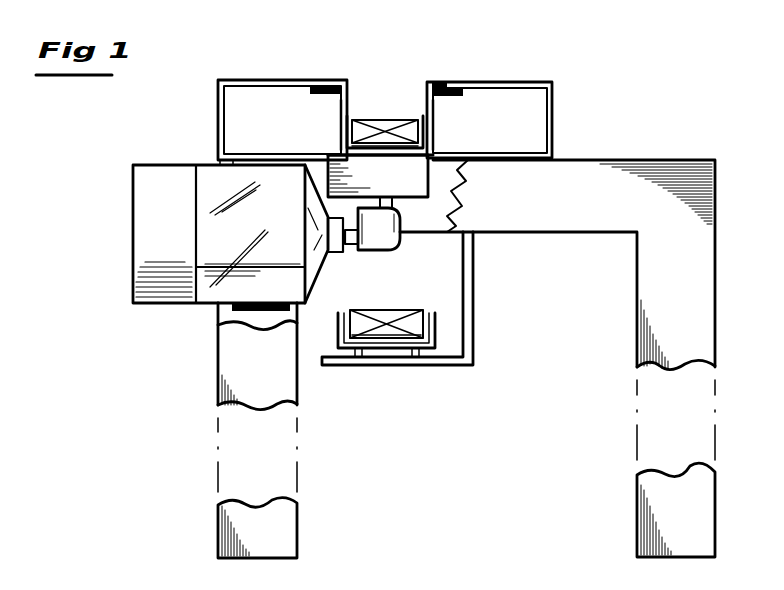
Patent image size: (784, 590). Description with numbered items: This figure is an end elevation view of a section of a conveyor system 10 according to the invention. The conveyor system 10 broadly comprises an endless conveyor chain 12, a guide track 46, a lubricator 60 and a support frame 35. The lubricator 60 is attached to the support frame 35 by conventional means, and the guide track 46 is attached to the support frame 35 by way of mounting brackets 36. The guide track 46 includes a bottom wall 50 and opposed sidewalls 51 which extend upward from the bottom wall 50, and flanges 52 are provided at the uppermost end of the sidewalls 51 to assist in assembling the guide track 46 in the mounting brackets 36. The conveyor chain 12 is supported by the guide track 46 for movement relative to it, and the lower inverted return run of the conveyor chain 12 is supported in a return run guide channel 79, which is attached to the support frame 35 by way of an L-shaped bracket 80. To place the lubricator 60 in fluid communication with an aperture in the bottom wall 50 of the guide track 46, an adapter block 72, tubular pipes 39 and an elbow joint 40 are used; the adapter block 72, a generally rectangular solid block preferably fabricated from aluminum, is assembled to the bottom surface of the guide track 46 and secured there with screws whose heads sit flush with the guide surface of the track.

The conveyor system 10 is at (624, 91).
The endless conveyor chain 12 is at (377, 108).
The support frame 35 is at (568, 172).
The mounting brackets 36 is at (276, 81).
The tubular pipes 39 is at (352, 244).
The elbow joint 40 is at (376, 250).
The guide track 46 is at (330, 130).
The bottom wall 50 is at (433, 159).
The sidewalls 51 is at (338, 113).
The flanges 52 is at (440, 88).
The lubricator 60 is at (150, 316).
The adapter block 72 is at (443, 178).
The return run guide channel 79 is at (338, 345).
The L-shaped bracket 80 is at (478, 302).